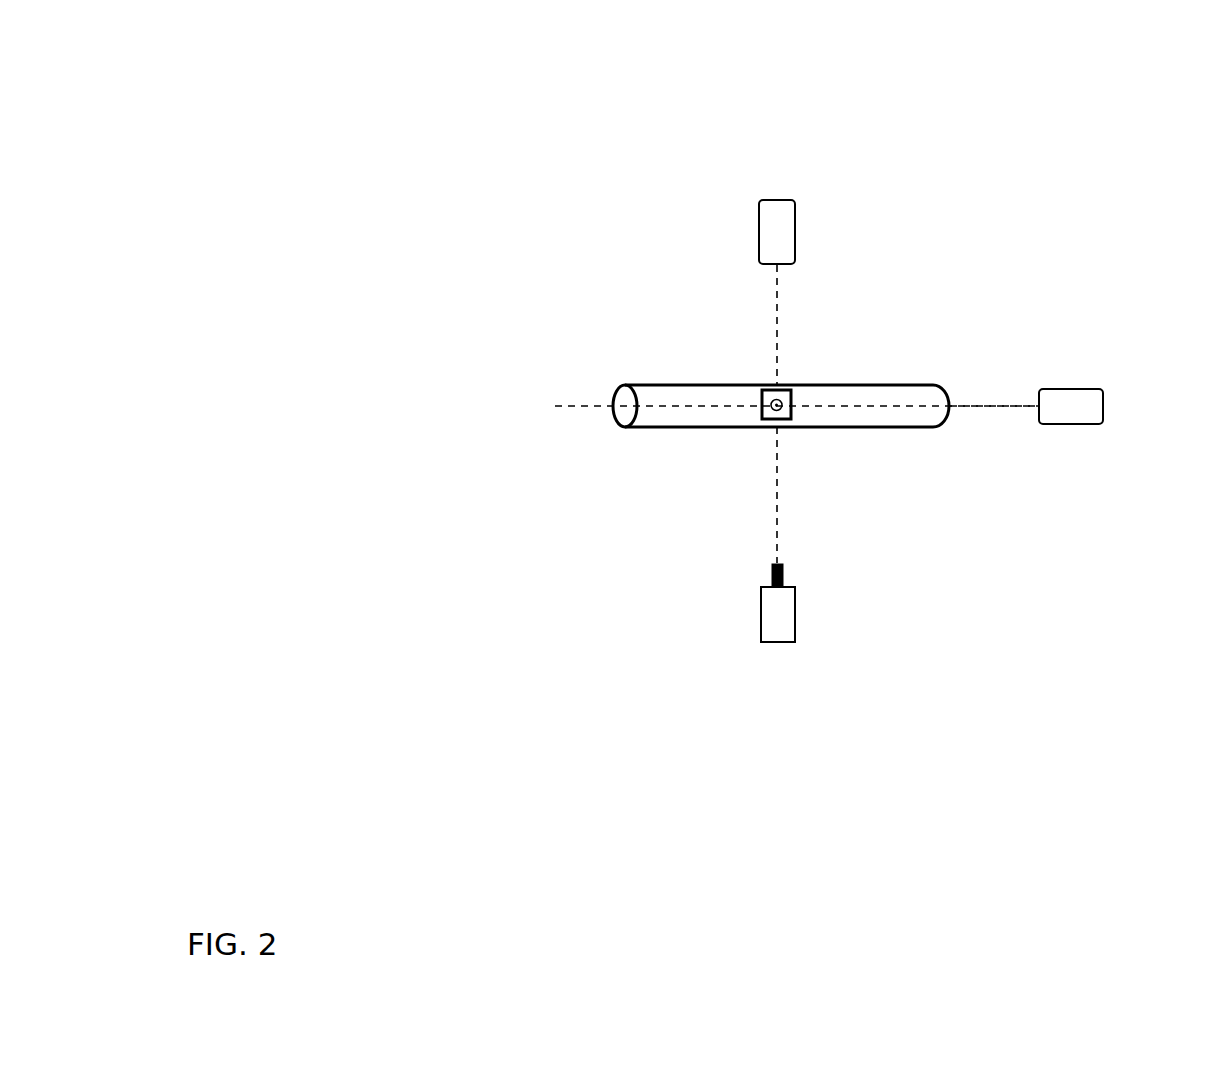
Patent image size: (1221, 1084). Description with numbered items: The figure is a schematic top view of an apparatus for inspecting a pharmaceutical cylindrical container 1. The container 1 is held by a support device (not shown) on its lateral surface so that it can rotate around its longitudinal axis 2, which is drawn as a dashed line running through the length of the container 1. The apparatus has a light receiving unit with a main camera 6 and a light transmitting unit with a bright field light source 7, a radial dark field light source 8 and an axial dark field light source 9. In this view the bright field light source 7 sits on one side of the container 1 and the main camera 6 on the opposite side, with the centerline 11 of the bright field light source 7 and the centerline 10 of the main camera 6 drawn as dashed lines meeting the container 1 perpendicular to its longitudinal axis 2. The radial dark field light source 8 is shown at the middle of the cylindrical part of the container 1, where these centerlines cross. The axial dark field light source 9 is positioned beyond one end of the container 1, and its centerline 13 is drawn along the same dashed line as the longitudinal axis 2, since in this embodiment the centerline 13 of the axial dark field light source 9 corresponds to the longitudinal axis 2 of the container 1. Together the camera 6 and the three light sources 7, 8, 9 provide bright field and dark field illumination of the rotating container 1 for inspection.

The pharmaceutical cylindrical container 1 is at (884, 383).
The longitudinal axis 2 is at (565, 408).
The main camera 6 is at (760, 619).
The bright field light source 7 is at (773, 200).
The radial dark field light source 8 is at (771, 427).
The axial dark field light source 9 is at (1095, 390).
The centerline of the main camera 10 is at (778, 463).
The centerline of the bright field light source 11 is at (778, 342).
The centerline of the axial dark field light source 13 is at (964, 405).